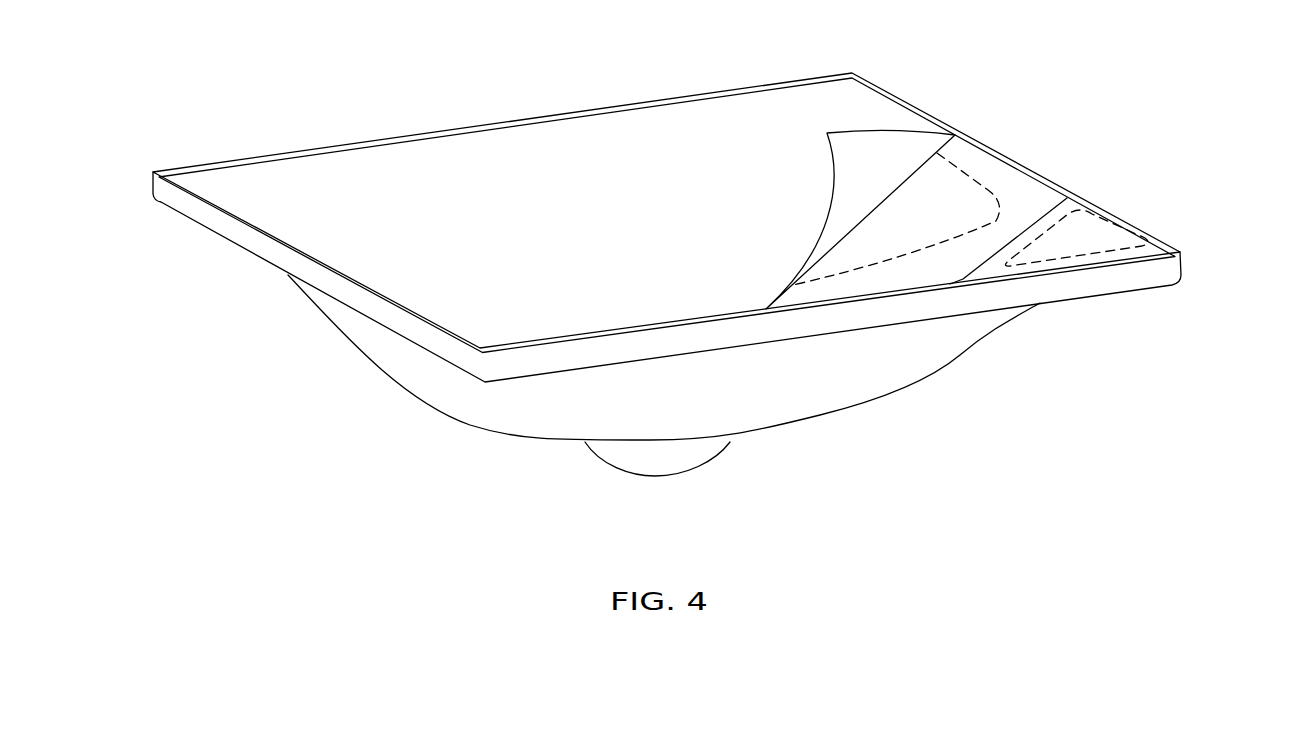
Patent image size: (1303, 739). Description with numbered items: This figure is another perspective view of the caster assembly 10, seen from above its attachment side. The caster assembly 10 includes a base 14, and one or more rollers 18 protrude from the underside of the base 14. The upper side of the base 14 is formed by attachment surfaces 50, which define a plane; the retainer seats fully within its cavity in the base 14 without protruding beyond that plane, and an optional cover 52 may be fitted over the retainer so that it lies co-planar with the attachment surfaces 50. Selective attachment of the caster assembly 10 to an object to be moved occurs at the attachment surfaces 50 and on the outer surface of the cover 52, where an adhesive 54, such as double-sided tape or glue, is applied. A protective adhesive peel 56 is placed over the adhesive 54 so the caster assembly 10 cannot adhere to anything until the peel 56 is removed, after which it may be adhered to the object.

The caster assembly 10 is at (1097, 82).
The base 14 is at (950, 363).
The roller 18 is at (608, 463).
The attachment surfaces 50 is at (161, 171).
The cover 52 is at (1020, 213).
The adhesive 54 is at (960, 189).
The protective adhesive peel 56 is at (890, 122).